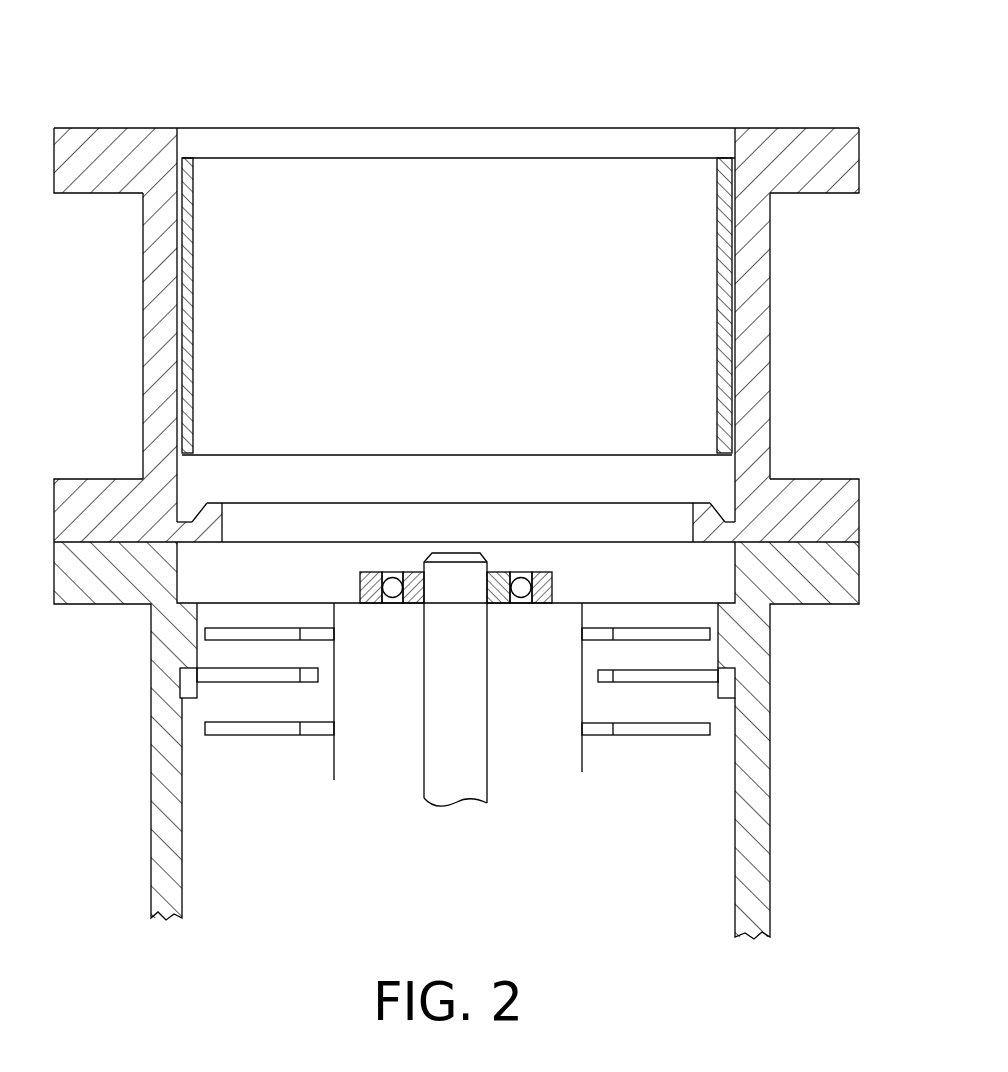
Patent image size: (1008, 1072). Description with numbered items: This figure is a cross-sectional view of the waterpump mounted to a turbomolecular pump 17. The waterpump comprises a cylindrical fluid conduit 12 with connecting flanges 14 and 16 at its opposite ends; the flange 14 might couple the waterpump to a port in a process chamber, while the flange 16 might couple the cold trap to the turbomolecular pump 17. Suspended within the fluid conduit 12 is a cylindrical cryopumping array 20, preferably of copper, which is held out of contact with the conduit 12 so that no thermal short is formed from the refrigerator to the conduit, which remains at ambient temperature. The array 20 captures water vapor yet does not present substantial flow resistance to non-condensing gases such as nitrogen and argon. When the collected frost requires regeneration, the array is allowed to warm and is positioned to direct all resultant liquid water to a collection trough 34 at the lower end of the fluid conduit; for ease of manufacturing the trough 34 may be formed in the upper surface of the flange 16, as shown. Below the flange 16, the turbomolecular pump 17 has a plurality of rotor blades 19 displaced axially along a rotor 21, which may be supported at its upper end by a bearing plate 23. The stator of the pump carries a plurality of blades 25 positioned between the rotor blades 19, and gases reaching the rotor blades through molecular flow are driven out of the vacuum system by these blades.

The cylindrical fluid conduit 12 is at (771, 305).
The connecting flange 14 is at (790, 127).
The connecting flange 16 is at (817, 478).
The turbomolecular pump 17 is at (772, 753).
The rotor blades 19 is at (635, 630).
The cylindrical cryopumping array 20 is at (193, 270).
The rotor 21 is at (334, 767).
The bearing plate 23 is at (366, 573).
The stator blades 25 is at (628, 683).
The collection trough 34 is at (723, 503).